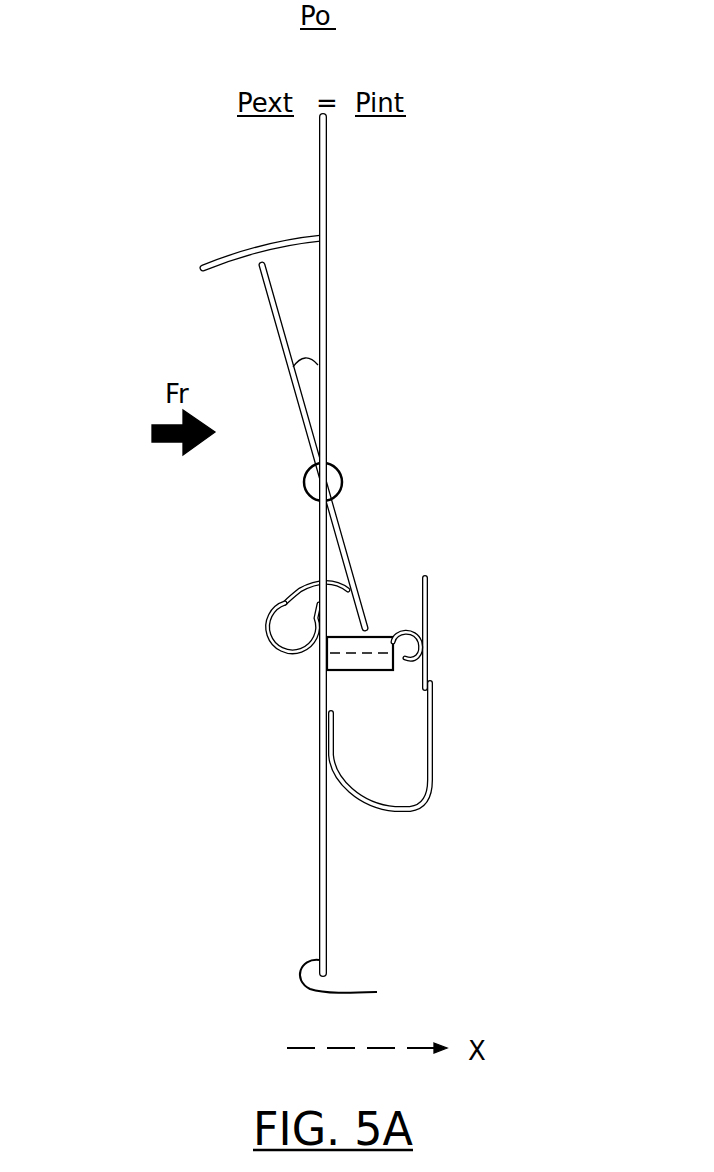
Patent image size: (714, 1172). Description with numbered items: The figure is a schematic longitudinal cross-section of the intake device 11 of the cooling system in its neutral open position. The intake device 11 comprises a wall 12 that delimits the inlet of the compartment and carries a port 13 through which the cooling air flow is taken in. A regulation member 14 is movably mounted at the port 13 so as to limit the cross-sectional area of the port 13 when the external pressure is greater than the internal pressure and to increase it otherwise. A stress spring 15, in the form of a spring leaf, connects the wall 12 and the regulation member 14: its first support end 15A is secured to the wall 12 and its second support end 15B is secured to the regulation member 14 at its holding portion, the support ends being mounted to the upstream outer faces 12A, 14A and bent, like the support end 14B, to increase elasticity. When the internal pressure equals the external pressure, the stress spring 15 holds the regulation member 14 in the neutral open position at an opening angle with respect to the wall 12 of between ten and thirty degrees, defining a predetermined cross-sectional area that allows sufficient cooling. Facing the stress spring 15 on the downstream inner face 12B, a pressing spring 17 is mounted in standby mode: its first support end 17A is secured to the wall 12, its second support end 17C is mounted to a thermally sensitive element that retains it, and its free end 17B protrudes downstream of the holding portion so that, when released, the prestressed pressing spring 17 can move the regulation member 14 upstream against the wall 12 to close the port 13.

The intake device 11 is at (150, 148).
The wall 12 is at (410, 970).
The outer face 12A is at (376, 986).
The inner face 12B is at (327, 945).
The port 13 is at (360, 289).
The regulation member 14 is at (359, 433).
The outer face 14A is at (338, 548).
The support end 14B is at (345, 490).
The stress spring 15 is at (235, 607).
The first support end 15A is at (318, 608).
The second support end 15B is at (340, 582).
The pressing spring 17 is at (467, 693).
The first support end 17A is at (328, 727).
The free end 17B is at (432, 608).
The second support end 17C is at (431, 662).